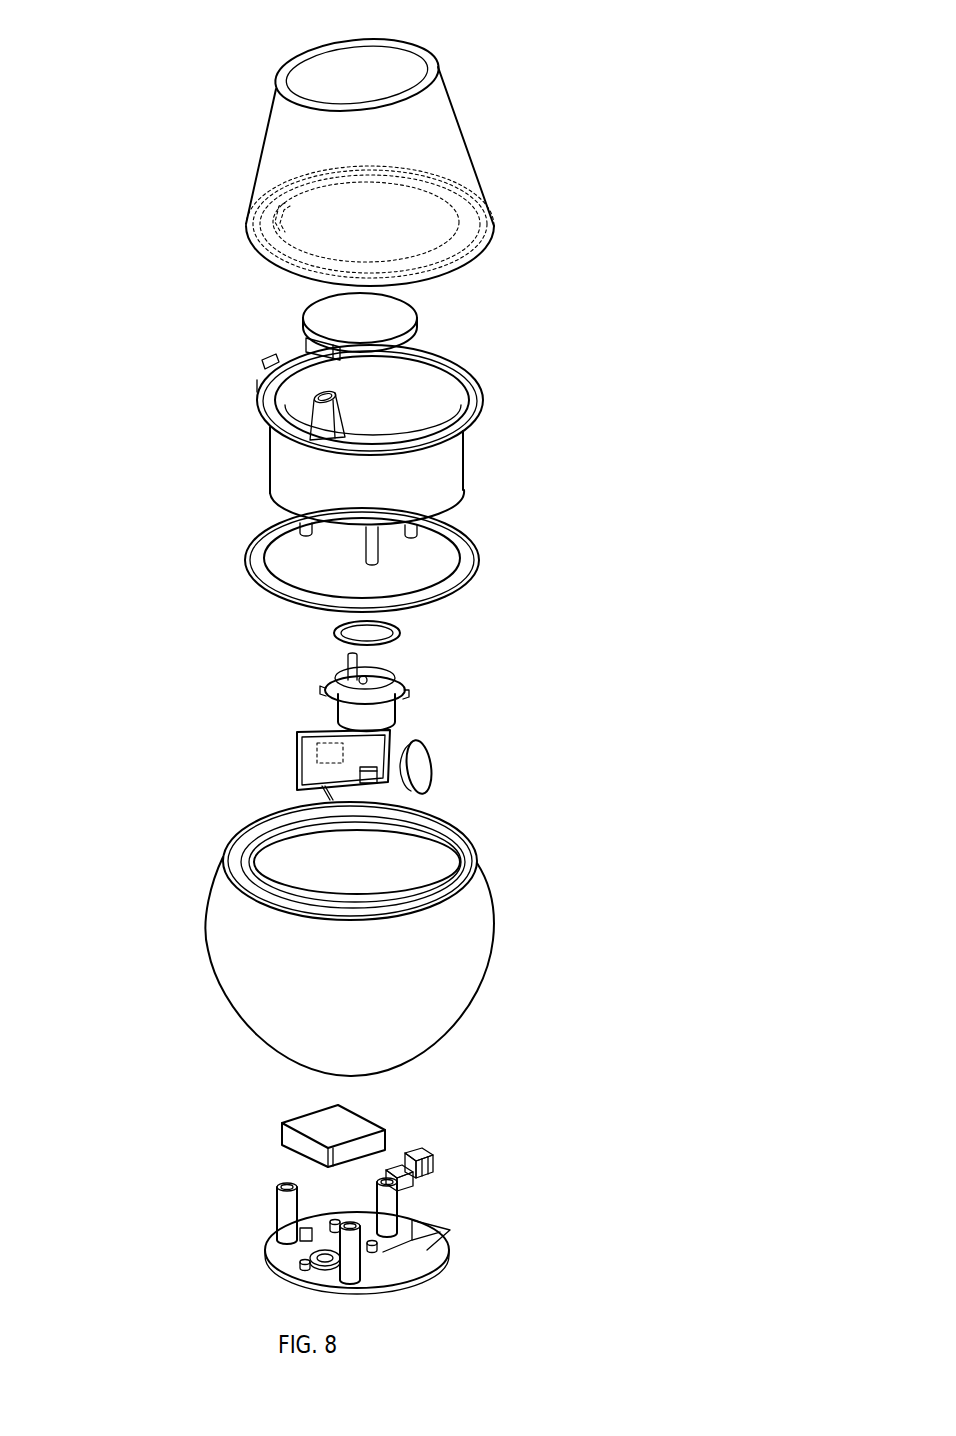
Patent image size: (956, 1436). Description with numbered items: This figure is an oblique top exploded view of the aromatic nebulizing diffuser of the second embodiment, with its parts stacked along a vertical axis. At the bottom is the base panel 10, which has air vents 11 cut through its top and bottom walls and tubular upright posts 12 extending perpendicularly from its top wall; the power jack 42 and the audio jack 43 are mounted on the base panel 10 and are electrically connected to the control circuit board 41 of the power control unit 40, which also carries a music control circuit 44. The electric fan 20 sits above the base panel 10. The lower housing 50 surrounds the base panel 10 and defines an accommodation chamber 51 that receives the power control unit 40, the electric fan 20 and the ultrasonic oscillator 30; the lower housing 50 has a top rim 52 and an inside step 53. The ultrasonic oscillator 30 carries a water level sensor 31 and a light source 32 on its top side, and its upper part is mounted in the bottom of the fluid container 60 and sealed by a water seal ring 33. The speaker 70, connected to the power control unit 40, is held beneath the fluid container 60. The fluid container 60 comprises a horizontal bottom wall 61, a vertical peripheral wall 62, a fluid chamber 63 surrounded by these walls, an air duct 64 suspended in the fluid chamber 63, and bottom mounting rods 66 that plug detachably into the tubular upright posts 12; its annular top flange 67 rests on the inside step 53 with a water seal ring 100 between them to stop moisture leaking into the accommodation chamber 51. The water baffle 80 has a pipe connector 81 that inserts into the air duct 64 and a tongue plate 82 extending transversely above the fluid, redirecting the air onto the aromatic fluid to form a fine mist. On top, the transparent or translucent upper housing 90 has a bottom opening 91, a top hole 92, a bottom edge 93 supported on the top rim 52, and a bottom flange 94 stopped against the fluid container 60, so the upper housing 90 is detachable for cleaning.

The base panel 10 is at (311, 1218).
The air vents 11 is at (312, 1267).
The tubular upright posts 12 is at (282, 1208).
The electric fan 20 is at (273, 1132).
The ultrasonic oscillator 30 is at (406, 689).
The water level sensor 31 is at (350, 665).
The light source 32 is at (368, 678).
The water seal ring 33 is at (400, 636).
The power control unit 40 is at (243, 744).
The control circuit board 41 is at (297, 733).
The power jack 42 is at (412, 1153).
The audio jack 43 is at (412, 1183).
The music control circuit 44 is at (320, 750).
The lower housing 50 is at (384, 939).
The accommodation chamber 51 is at (385, 862).
The top rim 52 is at (227, 850).
The inside step 53 is at (434, 843).
The fluid container 60 is at (391, 436).
The horizontal bottom wall 61 is at (390, 435).
The vertical peripheral wall 62 is at (283, 463).
The fluid chamber 63 is at (395, 390).
The air duct 64 is at (322, 400).
The bottom mounting rods 66 is at (372, 548).
The annular top flange 67 is at (277, 363).
The speaker 70 is at (436, 773).
The water baffle 80 is at (397, 294).
The pipe connector 81 is at (325, 348).
The tongue plate 82 is at (337, 312).
The upper housing 90 is at (407, 149).
The opening 91 is at (332, 212).
The hole 92 is at (392, 75).
The bottom edge 93 is at (498, 228).
The bottom flange 94 is at (282, 228).
The water seal ring 100 is at (465, 551).